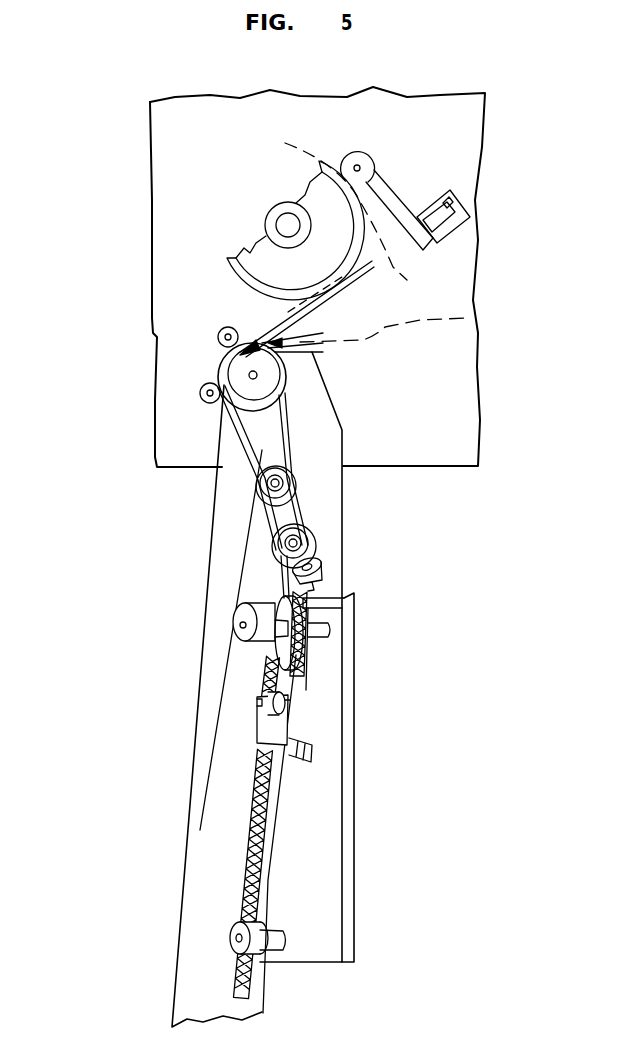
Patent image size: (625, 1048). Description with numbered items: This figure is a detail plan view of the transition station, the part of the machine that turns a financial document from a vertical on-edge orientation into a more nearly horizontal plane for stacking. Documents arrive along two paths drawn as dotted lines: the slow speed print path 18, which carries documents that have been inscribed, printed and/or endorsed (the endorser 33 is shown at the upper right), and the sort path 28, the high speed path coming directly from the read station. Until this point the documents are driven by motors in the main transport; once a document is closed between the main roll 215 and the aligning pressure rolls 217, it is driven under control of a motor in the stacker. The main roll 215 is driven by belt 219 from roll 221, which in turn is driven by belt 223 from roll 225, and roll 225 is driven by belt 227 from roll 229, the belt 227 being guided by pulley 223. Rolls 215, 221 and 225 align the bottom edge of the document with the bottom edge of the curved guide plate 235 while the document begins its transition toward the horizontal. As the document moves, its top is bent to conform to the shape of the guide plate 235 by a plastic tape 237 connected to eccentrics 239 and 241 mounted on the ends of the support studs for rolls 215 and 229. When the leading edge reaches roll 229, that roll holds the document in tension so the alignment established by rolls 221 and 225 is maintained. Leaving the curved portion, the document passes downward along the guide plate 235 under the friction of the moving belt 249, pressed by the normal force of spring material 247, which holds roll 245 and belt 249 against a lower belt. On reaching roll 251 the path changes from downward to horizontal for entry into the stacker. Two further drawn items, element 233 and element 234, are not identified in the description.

The slow speed print path 18 is at (400, 275).
The sort path 28 is at (470, 317).
The endorser 33 is at (410, 184).
The main roll 215 is at (300, 374).
The aligning pressure rolls 217 is at (217, 332).
The belt 219 is at (253, 452).
The roll 221 is at (307, 482).
The belt 223 is at (300, 510).
The roll 225 is at (322, 540).
The belt 227 is at (348, 598).
The roll 229 is at (282, 660).
The bushing 233 is at (322, 568).
The transport assembly 234 is at (205, 448).
The curved guide plate 235 is at (215, 533).
The plastic tape 237 is at (245, 563).
The eccentric 239 is at (230, 362).
The eccentric 241 is at (233, 620).
The roll 245 is at (263, 708).
The spring material 247 is at (257, 737).
The belt 249 is at (300, 653).
The roll 251 is at (233, 923).